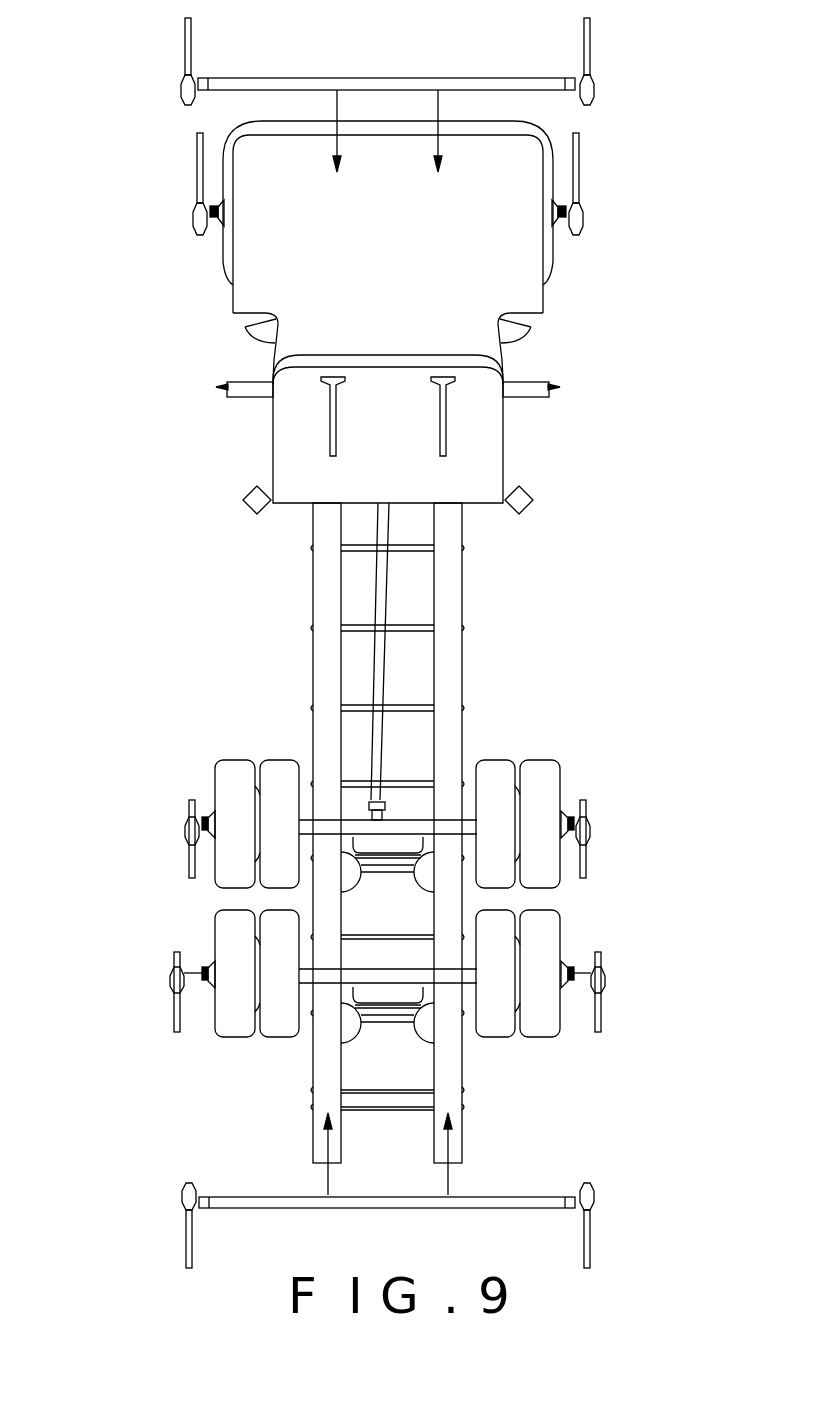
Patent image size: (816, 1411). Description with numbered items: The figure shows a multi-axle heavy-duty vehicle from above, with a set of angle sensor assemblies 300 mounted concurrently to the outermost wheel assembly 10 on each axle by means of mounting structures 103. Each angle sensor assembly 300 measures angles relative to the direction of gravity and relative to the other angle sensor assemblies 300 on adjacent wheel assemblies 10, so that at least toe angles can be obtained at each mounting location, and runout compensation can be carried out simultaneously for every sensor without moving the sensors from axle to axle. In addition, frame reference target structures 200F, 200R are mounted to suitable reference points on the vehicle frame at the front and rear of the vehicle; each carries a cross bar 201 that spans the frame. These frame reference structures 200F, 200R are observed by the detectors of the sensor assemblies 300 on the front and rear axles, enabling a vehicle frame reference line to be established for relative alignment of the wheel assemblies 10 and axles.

The wheel assembly 10 is at (224, 270).
The mounting structure 103 is at (215, 222).
The mounting bar 201 is at (412, 78).
The angle sensor assembly 300 is at (182, 96).
The frame reference target structure 200F is at (355, 70).
The frame reference target structure 200R is at (433, 1216).